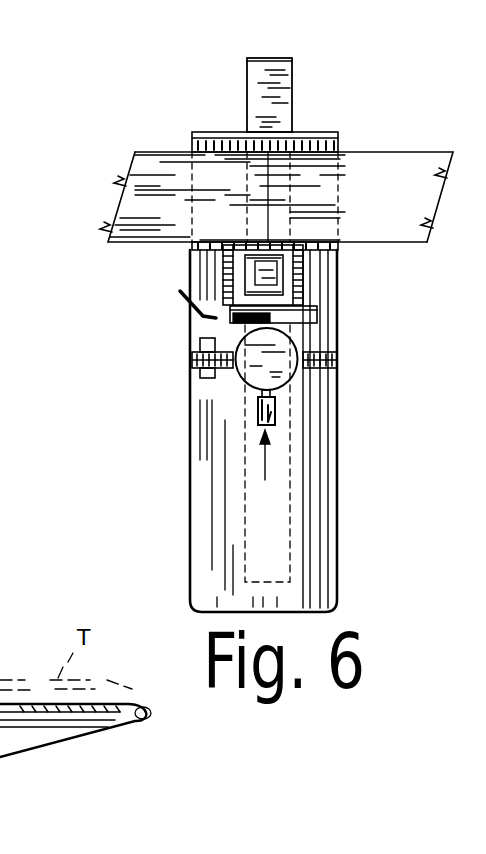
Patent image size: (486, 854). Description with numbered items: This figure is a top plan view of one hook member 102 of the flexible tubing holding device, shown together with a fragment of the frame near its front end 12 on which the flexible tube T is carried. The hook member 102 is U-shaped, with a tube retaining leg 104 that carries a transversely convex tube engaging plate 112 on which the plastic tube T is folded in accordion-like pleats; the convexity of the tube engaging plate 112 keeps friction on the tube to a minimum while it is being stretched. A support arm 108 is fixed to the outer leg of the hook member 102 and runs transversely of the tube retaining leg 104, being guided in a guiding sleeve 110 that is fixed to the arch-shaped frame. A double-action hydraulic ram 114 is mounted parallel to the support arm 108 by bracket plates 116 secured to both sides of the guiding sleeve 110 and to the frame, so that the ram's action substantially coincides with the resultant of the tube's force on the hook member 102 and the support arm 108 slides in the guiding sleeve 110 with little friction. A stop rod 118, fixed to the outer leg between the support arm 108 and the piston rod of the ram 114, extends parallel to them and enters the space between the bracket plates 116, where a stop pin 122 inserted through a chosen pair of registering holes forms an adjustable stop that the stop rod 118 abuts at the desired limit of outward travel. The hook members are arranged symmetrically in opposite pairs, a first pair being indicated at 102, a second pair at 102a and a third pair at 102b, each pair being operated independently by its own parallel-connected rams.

The hook member 102 is at (255, 83).
The second pair of hook members 102a is at (352, 558).
The third pair of hook members 102b is at (395, 429).
The tube retaining leg 104 is at (288, 528).
The support arm 108 is at (270, 262).
The guiding sleeve 110 is at (335, 283).
The tube engaging plate 112 is at (320, 447).
The double-action hydraulic ram 114 is at (277, 363).
The bracket plates 116 is at (222, 246).
The stop rod 118 is at (305, 343).
The stop pin 122 is at (183, 302).
The front end 12 is at (75, 692).